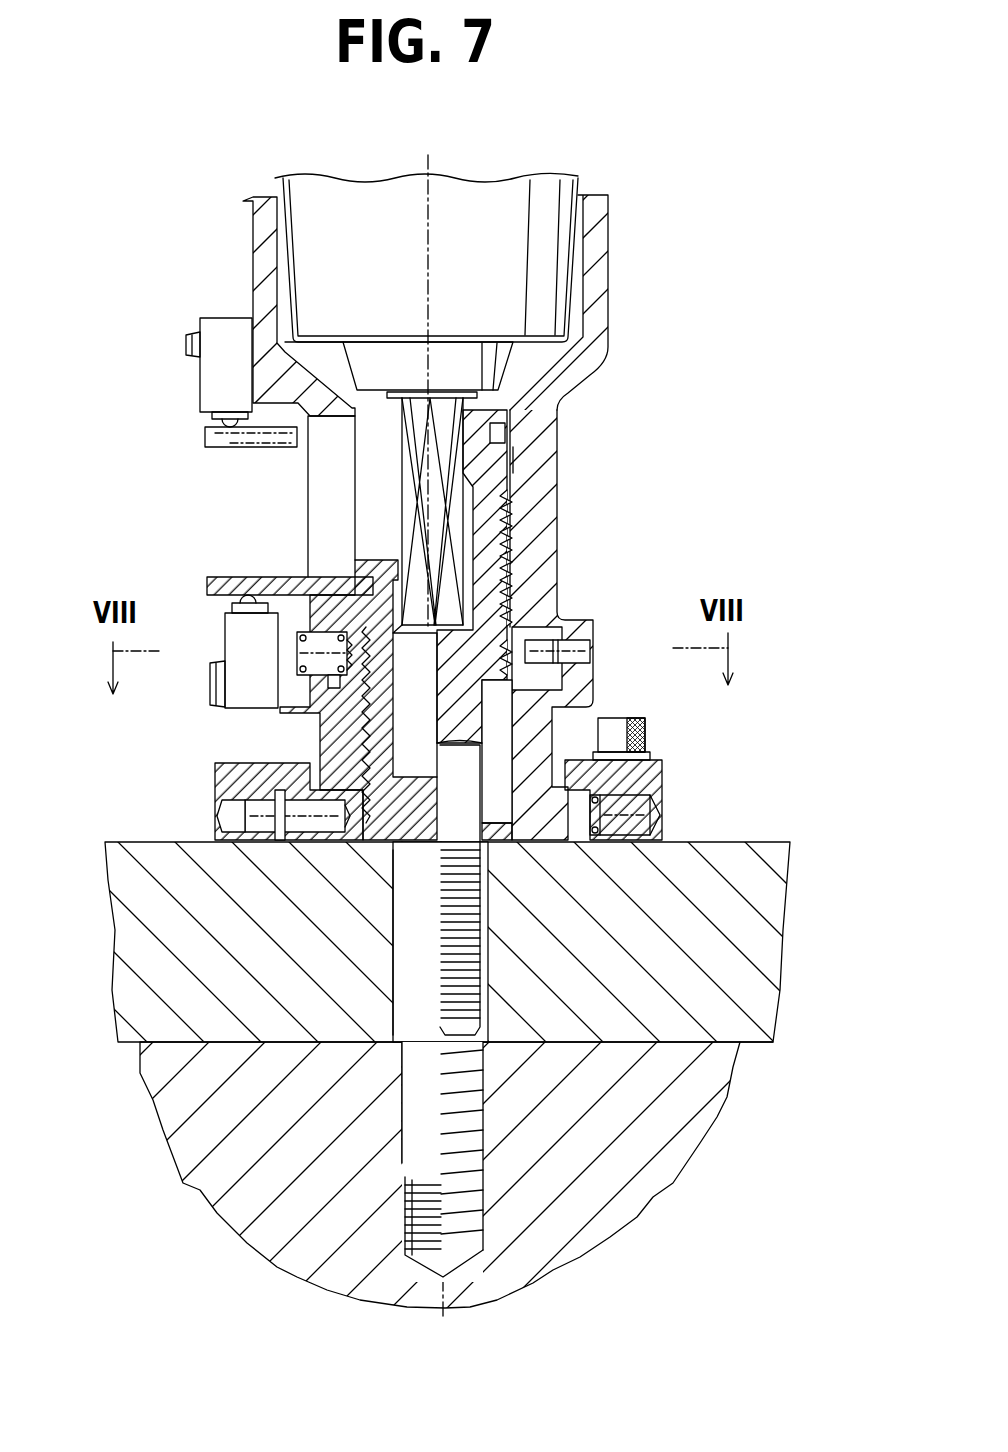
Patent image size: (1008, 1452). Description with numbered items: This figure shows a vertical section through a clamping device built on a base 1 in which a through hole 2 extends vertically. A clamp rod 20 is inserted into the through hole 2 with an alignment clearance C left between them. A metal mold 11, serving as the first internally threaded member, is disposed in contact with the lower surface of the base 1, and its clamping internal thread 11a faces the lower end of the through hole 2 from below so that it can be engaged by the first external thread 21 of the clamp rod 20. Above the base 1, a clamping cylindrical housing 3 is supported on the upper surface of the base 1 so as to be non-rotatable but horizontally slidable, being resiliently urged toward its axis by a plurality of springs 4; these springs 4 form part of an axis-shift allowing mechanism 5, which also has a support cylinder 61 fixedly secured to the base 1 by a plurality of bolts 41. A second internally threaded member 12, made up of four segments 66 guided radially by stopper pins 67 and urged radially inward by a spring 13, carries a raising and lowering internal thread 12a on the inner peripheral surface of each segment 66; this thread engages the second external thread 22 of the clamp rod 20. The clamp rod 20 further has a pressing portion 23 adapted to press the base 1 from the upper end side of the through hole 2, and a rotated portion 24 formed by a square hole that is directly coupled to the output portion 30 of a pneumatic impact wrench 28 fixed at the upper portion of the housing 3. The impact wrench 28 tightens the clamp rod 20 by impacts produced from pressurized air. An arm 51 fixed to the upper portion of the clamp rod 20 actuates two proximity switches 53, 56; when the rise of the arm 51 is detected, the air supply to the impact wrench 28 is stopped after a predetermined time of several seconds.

The base 1 is at (760, 884).
The through hole 2 is at (473, 937).
The clamping cylindrical housing 3 is at (624, 323).
The springs 4 is at (662, 808).
The axis-shift allowing mechanism 5 is at (704, 741).
The metal mold 11 is at (680, 1145).
The clamping internal thread 11a is at (473, 1127).
The second internally threaded member 12 is at (535, 603).
The raising and lowering internal thread 12a is at (510, 517).
The spring 13 is at (307, 675).
The clamp rod 20 is at (382, 904).
The first external thread 21 is at (488, 977).
The second external thread 22 is at (548, 478).
The pressing portion 23 is at (388, 808).
The rotated portion 24 is at (405, 567).
The pneumatic impact wrench 28 is at (597, 233).
The output portion 30 is at (402, 440).
The bolts 41 is at (632, 718).
The arm 51 is at (221, 585).
The proximity switch 53 is at (206, 380).
The proximity switch 56 is at (238, 701).
The support cylinder 61 is at (662, 772).
The segments 66 is at (332, 632).
The stopper pins 67 is at (575, 633).
The alignment clearance C is at (393, 945).